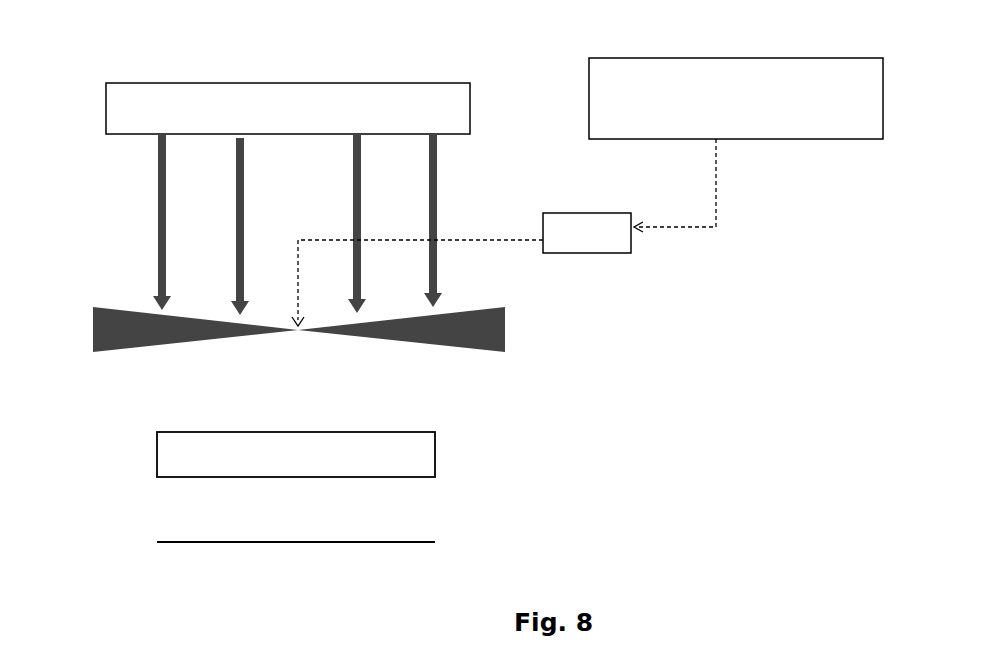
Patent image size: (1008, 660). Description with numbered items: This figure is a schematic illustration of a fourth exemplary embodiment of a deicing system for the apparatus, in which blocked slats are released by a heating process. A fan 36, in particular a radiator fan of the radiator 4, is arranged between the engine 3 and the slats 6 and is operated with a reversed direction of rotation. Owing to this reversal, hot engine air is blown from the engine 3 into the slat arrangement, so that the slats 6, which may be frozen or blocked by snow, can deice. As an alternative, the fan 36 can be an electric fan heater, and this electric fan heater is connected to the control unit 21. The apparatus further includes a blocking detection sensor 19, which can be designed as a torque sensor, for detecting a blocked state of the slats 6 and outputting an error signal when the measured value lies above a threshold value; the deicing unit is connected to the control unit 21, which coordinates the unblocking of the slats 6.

The engine 3 is at (390, 99).
The fan 36 is at (112, 320).
The blocking detection sensor 19 is at (800, 97).
The control unit 21 is at (578, 220).
The radiator 4 is at (423, 464).
The slats 6 is at (412, 542).